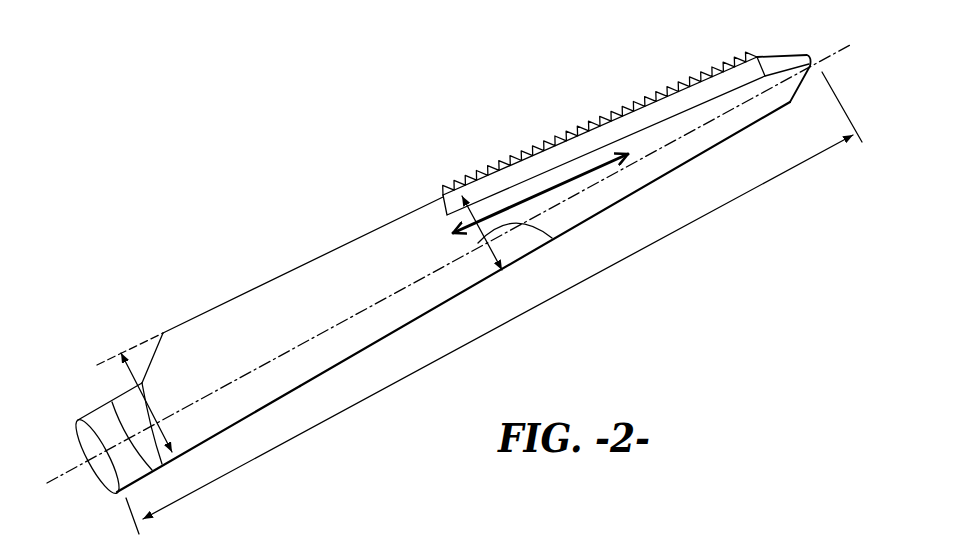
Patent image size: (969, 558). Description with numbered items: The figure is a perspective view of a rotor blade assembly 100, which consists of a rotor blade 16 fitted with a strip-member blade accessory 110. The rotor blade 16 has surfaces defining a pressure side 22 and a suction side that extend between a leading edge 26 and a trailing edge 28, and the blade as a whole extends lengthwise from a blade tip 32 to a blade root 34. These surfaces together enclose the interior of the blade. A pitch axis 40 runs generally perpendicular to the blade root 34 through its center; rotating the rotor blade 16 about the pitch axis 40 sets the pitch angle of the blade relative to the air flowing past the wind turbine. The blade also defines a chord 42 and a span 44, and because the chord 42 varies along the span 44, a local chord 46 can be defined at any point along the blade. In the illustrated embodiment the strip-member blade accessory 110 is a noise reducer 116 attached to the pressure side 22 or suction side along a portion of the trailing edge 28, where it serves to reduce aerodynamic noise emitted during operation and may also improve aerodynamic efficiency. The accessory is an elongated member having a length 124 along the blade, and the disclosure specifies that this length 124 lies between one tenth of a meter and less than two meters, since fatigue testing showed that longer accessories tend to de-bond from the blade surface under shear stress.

The rotor blade assembly 100 is at (318, 178).
The rotor blade 16 is at (292, 258).
The pressure side 22 is at (233, 318).
The leading edge 26 is at (255, 412).
The trailing edge 28 is at (178, 325).
The blade root 34 is at (122, 465).
The chord 42 is at (137, 398).
The pitch axis 40 is at (337, 323).
The span 44 is at (515, 318).
The local chord 46 is at (545, 227).
The strip-member blade accessory 110 is at (580, 122).
The noise reducer 116 is at (682, 110).
The blade tip 32 is at (790, 56).
The length 124 is at (543, 192).